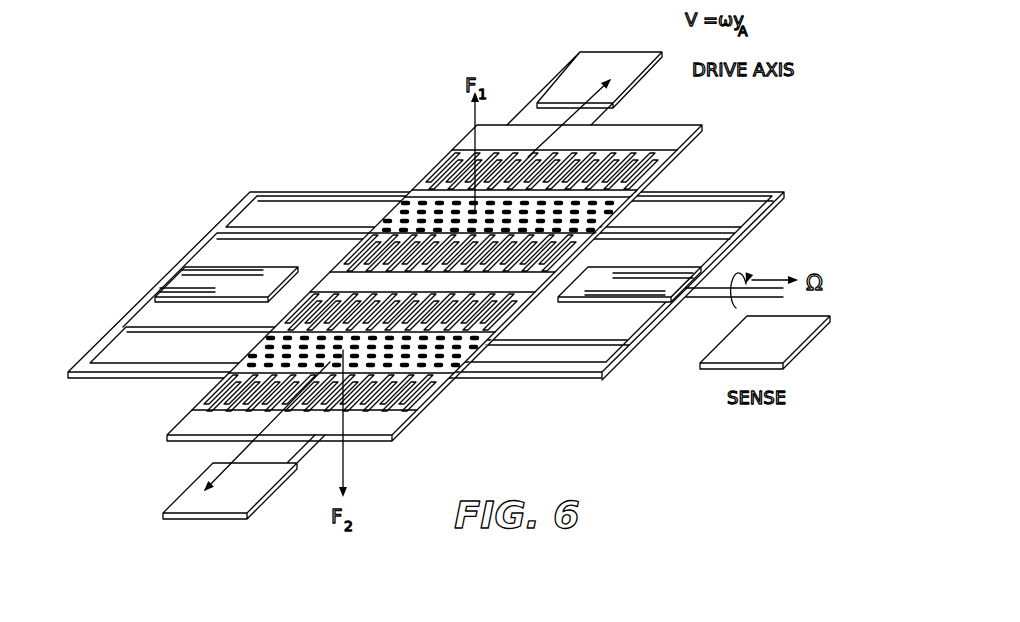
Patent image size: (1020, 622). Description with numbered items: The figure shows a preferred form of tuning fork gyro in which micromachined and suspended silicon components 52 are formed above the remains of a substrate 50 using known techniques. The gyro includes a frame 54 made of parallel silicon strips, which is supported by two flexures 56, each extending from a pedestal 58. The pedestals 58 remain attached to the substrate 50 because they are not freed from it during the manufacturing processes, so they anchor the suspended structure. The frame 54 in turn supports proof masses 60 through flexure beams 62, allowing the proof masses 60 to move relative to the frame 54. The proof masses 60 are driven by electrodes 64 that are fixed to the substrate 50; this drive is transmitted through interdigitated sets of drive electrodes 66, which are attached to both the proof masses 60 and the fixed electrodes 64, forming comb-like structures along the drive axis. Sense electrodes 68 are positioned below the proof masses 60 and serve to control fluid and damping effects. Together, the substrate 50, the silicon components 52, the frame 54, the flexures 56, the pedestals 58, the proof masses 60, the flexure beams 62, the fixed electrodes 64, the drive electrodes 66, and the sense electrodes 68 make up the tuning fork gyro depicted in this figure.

The substrate 50 is at (316, 133).
The micromachined silicon components 52 is at (460, 289).
The frame 54 is at (148, 322).
The flexures 56 is at (258, 283).
The pedestals 58 is at (262, 270).
The proof masses 60 is at (405, 356).
The flexure beams 62 is at (310, 226).
The electrodes 64 is at (577, 140).
The drive electrodes 66 is at (512, 322).
The sense electrodes 68 is at (660, 183).